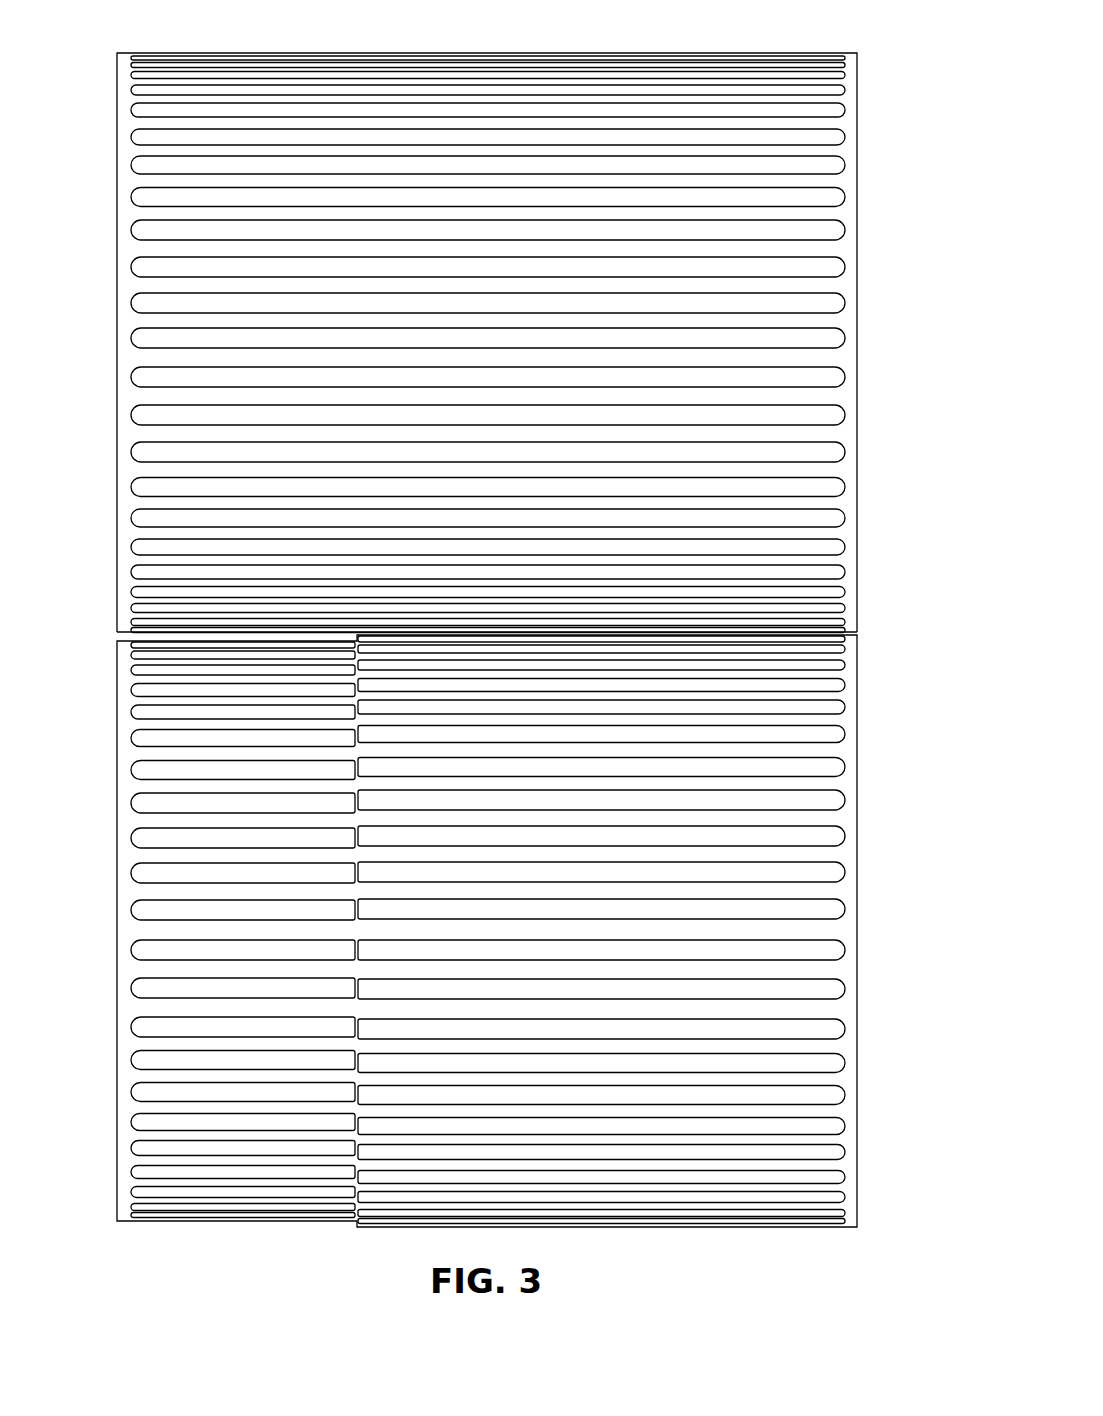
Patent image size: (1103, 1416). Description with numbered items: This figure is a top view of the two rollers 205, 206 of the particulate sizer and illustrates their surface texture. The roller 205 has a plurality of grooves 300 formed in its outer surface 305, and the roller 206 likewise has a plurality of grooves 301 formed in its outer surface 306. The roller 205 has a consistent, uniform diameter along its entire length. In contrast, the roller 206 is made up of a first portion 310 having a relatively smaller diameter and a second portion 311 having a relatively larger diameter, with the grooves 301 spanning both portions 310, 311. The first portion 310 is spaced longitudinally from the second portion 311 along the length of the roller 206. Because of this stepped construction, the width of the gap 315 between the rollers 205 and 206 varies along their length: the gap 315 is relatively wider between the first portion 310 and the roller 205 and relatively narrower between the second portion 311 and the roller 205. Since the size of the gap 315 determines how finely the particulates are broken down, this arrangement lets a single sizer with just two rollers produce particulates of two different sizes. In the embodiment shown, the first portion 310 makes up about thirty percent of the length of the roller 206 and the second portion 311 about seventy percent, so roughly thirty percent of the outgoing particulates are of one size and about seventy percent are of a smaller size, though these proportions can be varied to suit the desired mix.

The roller 205 is at (453, 317).
The roller 206 is at (488, 960).
The grooves 300 is at (148, 302).
The outer surface 305 is at (148, 402).
The grooves 301 is at (148, 838).
The outer surface 306 is at (146, 931).
The first portion 310 is at (202, 957).
The second portion 311 is at (607, 960).
The gap 315 is at (105, 641).